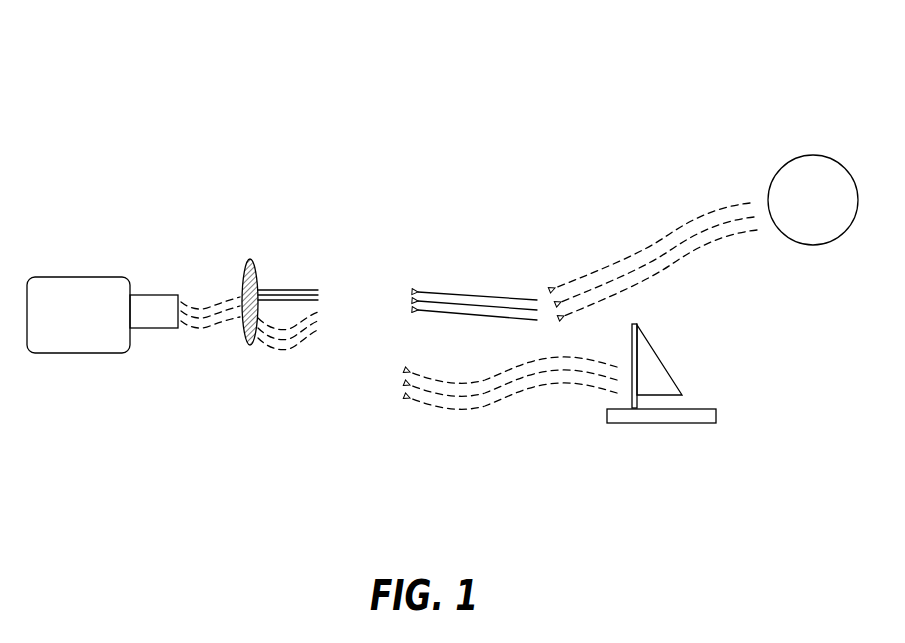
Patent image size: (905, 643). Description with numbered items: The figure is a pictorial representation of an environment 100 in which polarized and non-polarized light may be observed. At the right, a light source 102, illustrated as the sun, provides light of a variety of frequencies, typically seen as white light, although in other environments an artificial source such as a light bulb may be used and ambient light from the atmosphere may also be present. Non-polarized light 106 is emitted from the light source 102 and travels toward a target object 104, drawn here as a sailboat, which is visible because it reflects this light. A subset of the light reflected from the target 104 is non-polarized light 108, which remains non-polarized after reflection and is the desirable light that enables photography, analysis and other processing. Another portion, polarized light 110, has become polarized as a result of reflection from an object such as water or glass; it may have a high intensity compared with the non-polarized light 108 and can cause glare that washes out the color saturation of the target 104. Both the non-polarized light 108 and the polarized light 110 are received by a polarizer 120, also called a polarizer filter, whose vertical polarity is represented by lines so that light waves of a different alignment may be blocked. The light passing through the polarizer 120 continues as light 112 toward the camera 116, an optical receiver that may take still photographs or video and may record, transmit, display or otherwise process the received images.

The environment 100 is at (765, 60).
The light source 102 is at (797, 155).
The target object 104 is at (695, 423).
The non-polarized light 106 is at (640, 258).
The non-polarized light 108 is at (468, 410).
The polarized light 110 is at (450, 292).
The focused light to camera 112 is at (208, 330).
The camera 116 is at (82, 277).
The polarizer 120 is at (258, 274).